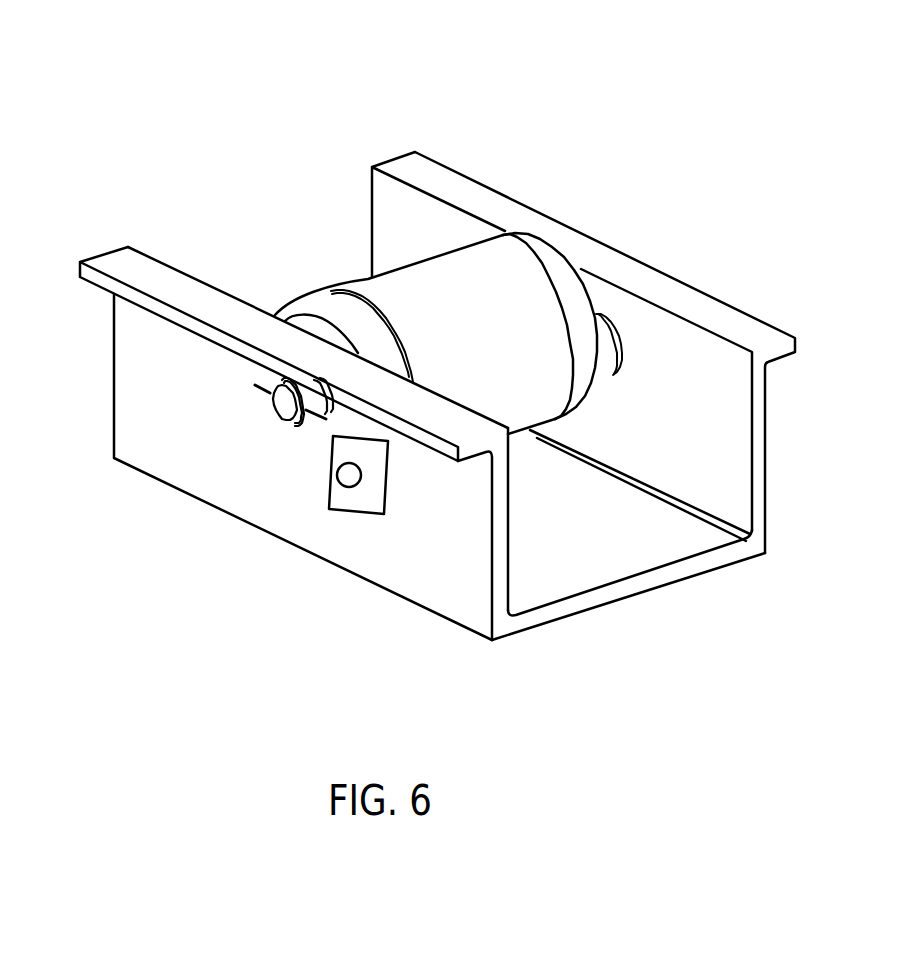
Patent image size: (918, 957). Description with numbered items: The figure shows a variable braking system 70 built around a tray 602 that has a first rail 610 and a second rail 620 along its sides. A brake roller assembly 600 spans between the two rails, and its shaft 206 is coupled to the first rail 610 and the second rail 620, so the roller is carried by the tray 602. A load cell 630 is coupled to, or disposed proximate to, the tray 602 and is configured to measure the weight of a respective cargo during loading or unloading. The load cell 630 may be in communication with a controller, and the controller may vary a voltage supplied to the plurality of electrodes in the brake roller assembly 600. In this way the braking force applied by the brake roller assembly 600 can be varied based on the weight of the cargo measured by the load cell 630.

The variable braking system 70 is at (233, 73).
The brake roller assembly 600 is at (338, 230).
The shaft 206 is at (287, 402).
The first rail 610 is at (166, 433).
The second rail 620 is at (735, 445).
The tray 602 is at (600, 550).
The load cell 630 is at (352, 500).